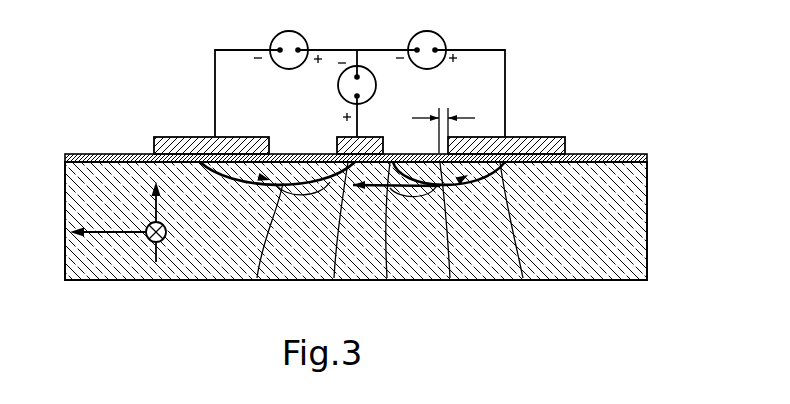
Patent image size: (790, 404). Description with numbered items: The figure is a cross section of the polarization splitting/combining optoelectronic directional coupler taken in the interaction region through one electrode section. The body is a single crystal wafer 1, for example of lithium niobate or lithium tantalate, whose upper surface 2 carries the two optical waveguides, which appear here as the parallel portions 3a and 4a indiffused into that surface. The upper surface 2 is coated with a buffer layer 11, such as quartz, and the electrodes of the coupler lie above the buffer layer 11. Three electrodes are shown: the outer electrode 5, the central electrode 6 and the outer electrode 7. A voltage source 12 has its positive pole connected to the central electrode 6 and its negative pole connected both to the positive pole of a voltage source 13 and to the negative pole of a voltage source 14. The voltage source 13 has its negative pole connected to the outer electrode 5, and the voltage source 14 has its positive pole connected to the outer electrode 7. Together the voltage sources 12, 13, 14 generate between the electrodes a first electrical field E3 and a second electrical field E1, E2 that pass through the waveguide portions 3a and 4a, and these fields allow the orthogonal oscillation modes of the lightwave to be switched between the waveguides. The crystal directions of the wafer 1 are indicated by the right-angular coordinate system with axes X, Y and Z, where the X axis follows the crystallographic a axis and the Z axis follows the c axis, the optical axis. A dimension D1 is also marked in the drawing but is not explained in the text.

The single crystal wafer 1 is at (647, 225).
The upper surface 2 is at (643, 182).
The buffer layer 11 is at (92, 154).
The outer electrode 5 is at (184, 138).
The central electrode 6 is at (337, 131).
The outer electrode 7 is at (546, 138).
The voltage source 12 is at (372, 70).
The voltage source 13 is at (272, 40).
The voltage source 14 is at (446, 42).
The offset distance D1 is at (446, 116).
The parallel portion of waveguide 3a is at (257, 278).
The parallel portion of waveguide 4a is at (450, 278).
The second electrical field E1 is at (334, 278).
The second electrical field E2 is at (523, 278).
The first electrical field E3 is at (387, 278).
The X axis X is at (152, 255).
The Y axis Y is at (165, 238).
The Z axis Z is at (102, 228).